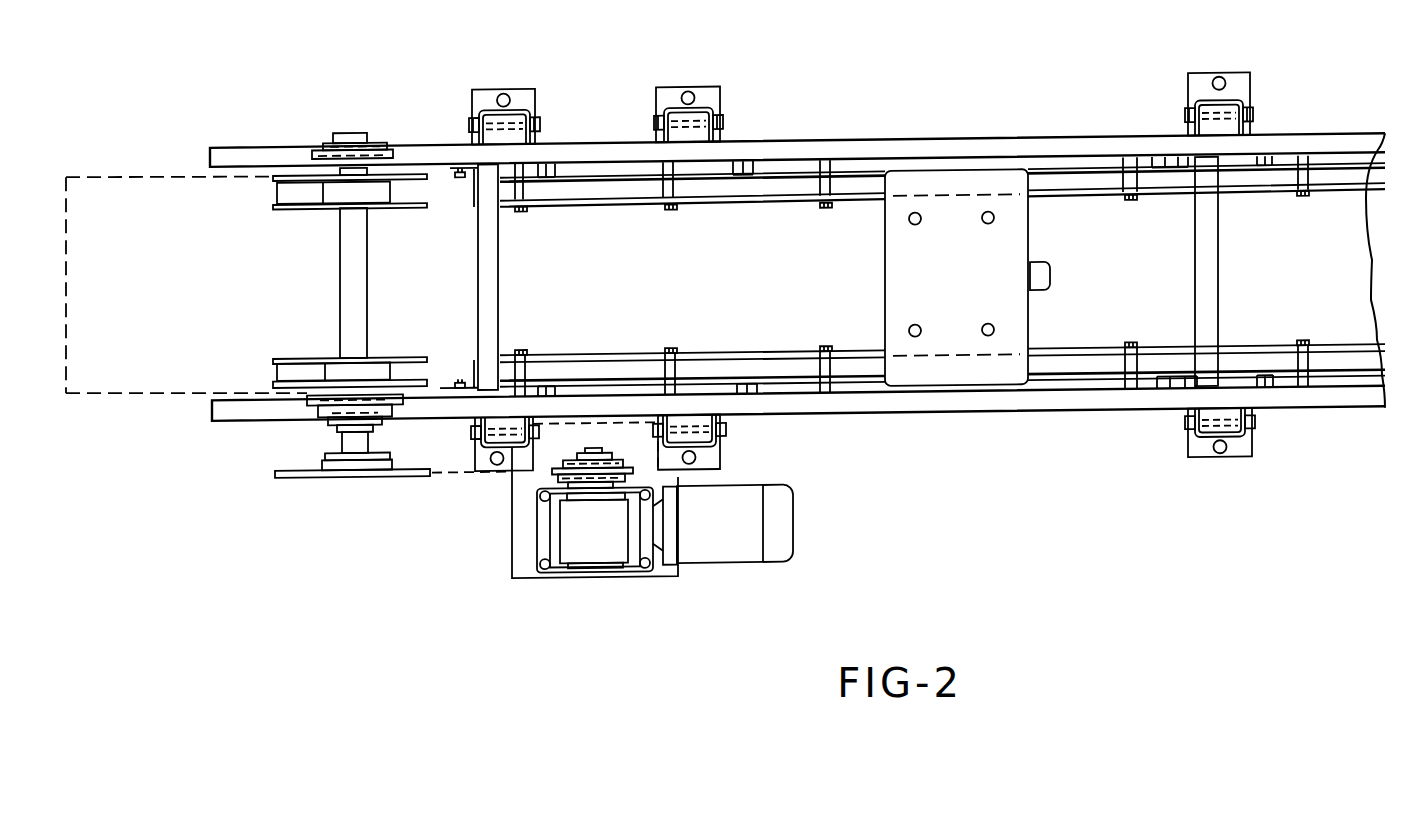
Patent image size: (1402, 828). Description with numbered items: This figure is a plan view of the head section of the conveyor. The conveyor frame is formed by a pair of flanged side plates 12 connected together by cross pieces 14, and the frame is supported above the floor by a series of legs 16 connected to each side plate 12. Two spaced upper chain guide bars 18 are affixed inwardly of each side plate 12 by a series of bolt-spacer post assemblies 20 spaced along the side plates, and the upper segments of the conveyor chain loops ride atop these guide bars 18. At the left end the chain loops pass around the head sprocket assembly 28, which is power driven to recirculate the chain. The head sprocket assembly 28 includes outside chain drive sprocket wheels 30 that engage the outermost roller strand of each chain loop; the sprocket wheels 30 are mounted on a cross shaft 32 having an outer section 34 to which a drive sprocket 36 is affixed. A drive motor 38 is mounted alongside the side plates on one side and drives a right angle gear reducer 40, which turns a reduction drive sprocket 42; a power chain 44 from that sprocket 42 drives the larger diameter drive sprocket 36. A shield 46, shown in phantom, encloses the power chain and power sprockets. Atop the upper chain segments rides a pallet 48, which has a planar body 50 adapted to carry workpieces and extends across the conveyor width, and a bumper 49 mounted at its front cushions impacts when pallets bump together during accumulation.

The flanged side plate 12 is at (1063, 149).
The cross piece 14 is at (476, 296).
The leg 16 is at (485, 110).
The upper chain guide bar 18 is at (587, 190).
The bolt-spacer post assembly 20 is at (517, 217).
The head sprocket assembly 28 is at (299, 265).
The outside chain drive sprocket wheel 30 is at (273, 173).
The cross shaft 32 is at (338, 262).
The outer section 34 is at (368, 442).
The drive sprocket 36 is at (295, 483).
The drive motor 38 is at (722, 581).
The right angle gear reducer 40 is at (594, 549).
The reduction drive sprocket 42 is at (553, 479).
The power chain 44 is at (447, 483).
The shield 46 is at (131, 402).
The pallet 48 is at (986, 277).
The bumper 49 is at (1052, 285).
The planar body 50 is at (971, 297).